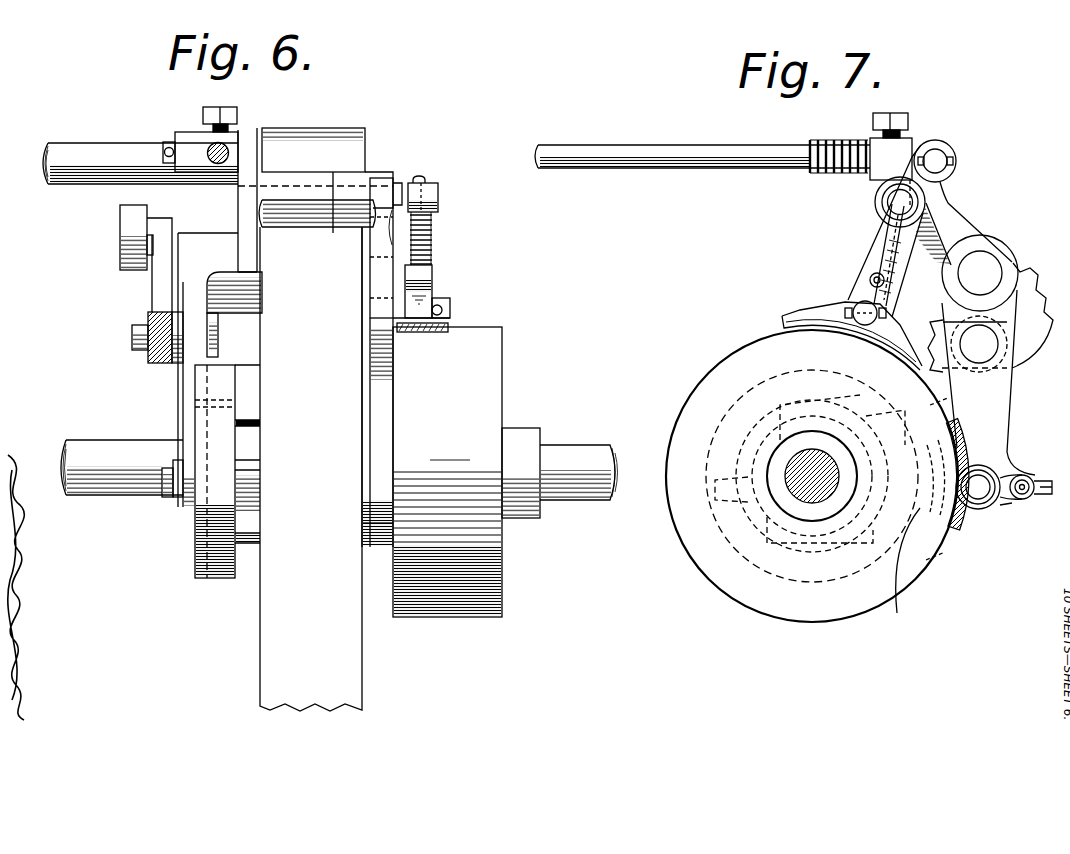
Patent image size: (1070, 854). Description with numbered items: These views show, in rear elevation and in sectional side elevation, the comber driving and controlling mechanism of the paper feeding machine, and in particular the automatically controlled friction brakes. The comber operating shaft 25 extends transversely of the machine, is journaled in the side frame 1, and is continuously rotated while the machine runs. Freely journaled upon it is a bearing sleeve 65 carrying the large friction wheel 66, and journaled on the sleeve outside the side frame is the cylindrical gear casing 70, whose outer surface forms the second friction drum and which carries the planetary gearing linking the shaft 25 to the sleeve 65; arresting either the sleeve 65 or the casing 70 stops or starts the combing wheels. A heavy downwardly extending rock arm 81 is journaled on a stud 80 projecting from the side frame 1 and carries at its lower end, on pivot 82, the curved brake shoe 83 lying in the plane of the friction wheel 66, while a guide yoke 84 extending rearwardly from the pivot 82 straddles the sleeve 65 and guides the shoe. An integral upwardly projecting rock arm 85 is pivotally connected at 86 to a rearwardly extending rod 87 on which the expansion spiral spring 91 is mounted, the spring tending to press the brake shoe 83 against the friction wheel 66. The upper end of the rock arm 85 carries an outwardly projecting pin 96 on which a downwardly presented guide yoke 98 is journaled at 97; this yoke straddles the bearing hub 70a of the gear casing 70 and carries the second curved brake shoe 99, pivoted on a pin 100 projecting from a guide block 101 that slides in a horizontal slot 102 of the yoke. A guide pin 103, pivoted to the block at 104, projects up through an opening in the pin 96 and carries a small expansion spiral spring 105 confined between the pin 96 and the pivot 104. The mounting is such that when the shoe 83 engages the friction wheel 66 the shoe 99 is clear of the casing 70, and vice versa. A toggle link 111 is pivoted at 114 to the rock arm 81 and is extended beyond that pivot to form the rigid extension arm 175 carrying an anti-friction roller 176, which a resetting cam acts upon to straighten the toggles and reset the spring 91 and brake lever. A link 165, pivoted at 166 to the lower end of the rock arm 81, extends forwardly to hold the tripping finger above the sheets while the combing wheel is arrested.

In FIG. 6, the side frame 1 is at (318, 630).
In FIG. 6, the comber operating shaft 25 is at (106, 450).
In FIG. 7, the comber operating shaft 25 is at (790, 487).
In FIG. 6, the bearing sleeve 65 is at (253, 453).
In FIG. 6, the friction wheel 66 is at (197, 568).
In FIG. 6, the gear casing 70 is at (471, 341).
In FIG. 7, the gear casing 70 is at (713, 585).
In FIG. 6, the bearing hub 70a is at (362, 526).
In FIG. 7, the stud 80 is at (987, 267).
In FIG. 6, the rock arm 81 is at (258, 300).
In FIG. 7, the rock arm 81 is at (1003, 407).
In FIG. 6, the pivot 82 is at (130, 497).
In FIG. 7, the pivot 82 is at (979, 485).
In FIG. 7, the brake shoe 83 is at (962, 530).
In FIG. 6, the guide yoke 84 is at (247, 523).
In FIG. 7, the guide yoke 84 is at (911, 575).
In FIG. 6, the rock arm 85 is at (260, 243).
In FIG. 7, the rock arm 85 is at (945, 215).
In FIG. 7, the pivotal connection 86 is at (938, 159).
In FIG. 6, the rod 87 is at (213, 148).
In FIG. 7, the rod 87 is at (609, 150).
In FIG. 7, the expansion spiral spring 91 is at (813, 142).
In FIG. 6, the pin or bolt 96 is at (432, 185).
In FIG. 7, the pin or bolt 96 is at (880, 205).
In FIG. 6, the journal 97 is at (374, 185).
In FIG. 6, the guide yoke 98 is at (380, 350).
In FIG. 6, the brake shoe 99 is at (418, 320).
In FIG. 7, the brake shoe 99 is at (812, 316).
In FIG. 6, the pin 100 is at (449, 301).
In FIG. 6, the guide block 101 is at (368, 306).
In FIG. 7, the horizontal slot 102 is at (862, 262).
In FIG. 6, the guide pin 103 is at (423, 176).
In FIG. 7, the pivot pin 104 is at (868, 281).
In FIG. 6, the expansion spiral spring 105 is at (430, 233).
In FIG. 6, the toggle link 111 is at (152, 354).
In FIG. 7, the toggle link 111 is at (1048, 268).
In FIG. 7, the pivot 114 is at (988, 350).
In FIG. 7, the link 165 is at (1031, 507).
In FIG. 7, the pivotal connection 166 is at (1025, 486).
In FIG. 6, the extension arm 175 is at (168, 290).
In FIG. 6, the anti-friction roller 176 is at (124, 232).